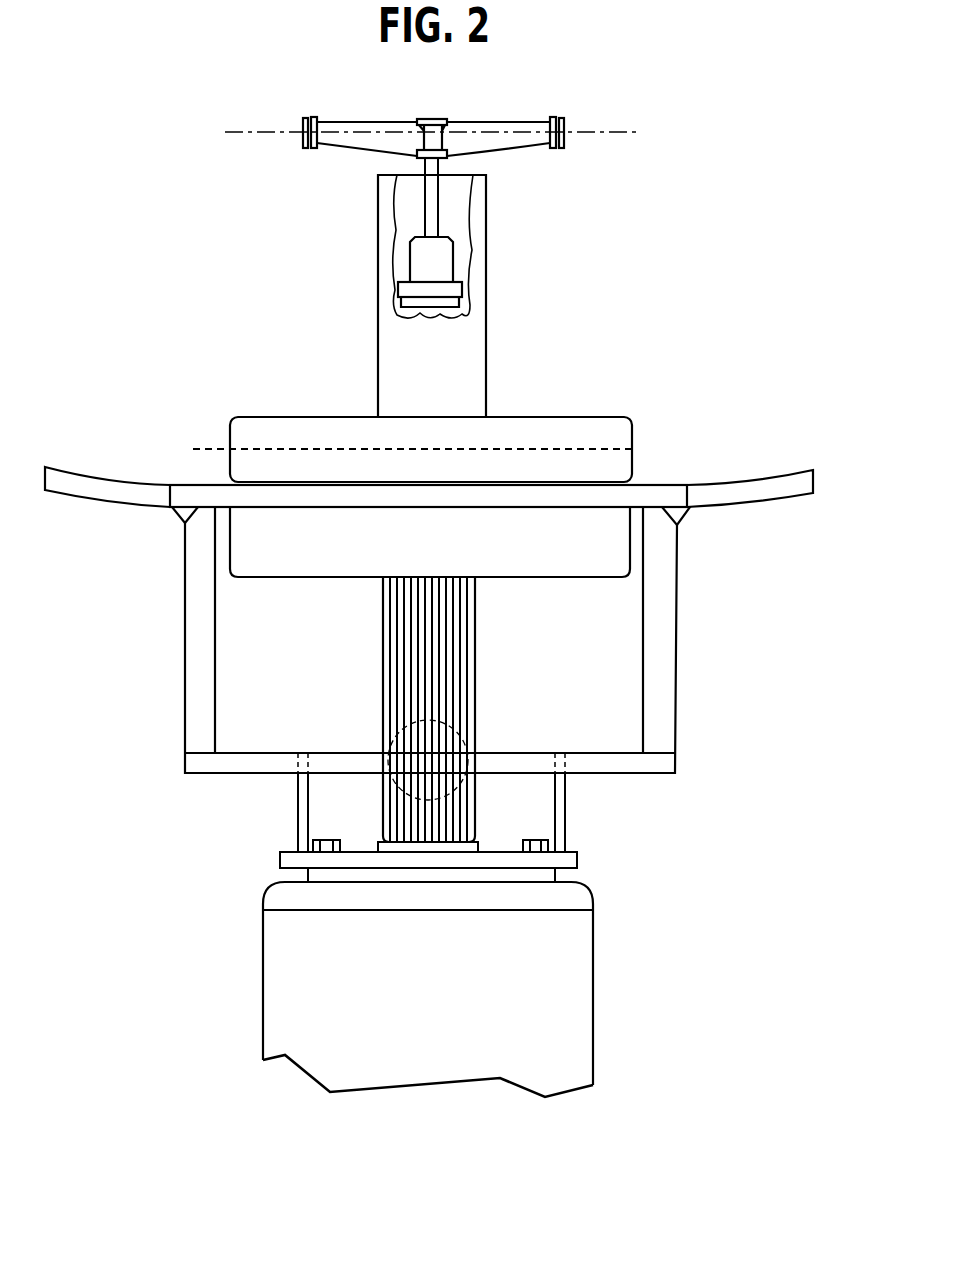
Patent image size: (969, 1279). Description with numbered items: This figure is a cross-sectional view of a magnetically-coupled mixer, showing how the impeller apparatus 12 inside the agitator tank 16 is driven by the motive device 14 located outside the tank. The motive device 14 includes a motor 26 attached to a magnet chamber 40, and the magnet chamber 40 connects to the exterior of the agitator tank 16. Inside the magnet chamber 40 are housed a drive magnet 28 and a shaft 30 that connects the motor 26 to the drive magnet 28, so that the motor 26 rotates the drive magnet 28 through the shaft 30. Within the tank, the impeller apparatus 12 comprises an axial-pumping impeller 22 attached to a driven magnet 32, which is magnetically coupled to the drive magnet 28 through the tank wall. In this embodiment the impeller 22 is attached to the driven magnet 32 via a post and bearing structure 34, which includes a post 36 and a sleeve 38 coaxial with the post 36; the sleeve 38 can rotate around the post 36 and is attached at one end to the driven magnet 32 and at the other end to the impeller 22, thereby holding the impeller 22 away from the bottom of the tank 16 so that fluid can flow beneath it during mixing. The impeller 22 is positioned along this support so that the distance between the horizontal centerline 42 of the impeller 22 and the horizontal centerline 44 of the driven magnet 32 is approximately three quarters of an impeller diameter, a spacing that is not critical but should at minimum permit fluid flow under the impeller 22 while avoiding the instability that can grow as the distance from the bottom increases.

The impeller apparatus 12 is at (262, 312).
The motive device 14 is at (722, 958).
The agitator tank 16 is at (765, 508).
The axial-pumping impeller 22 is at (347, 125).
The motor 26 is at (588, 960).
The drive magnet 28 is at (603, 547).
The shaft 30 is at (455, 670).
The driven magnet 32 is at (367, 435).
The post and bearing structure 34 is at (350, 226).
The post 36 is at (440, 258).
The sleeve 38 is at (447, 391).
The magnet chamber 40 is at (183, 600).
The horizontal centerline of the impeller 42 is at (449, 134).
The horizontal centerline of the driven magnet 44 is at (636, 449).